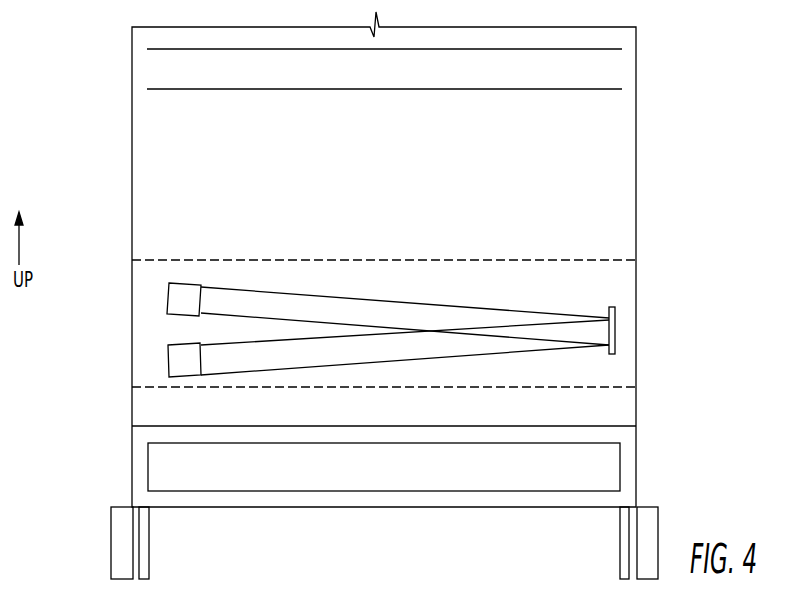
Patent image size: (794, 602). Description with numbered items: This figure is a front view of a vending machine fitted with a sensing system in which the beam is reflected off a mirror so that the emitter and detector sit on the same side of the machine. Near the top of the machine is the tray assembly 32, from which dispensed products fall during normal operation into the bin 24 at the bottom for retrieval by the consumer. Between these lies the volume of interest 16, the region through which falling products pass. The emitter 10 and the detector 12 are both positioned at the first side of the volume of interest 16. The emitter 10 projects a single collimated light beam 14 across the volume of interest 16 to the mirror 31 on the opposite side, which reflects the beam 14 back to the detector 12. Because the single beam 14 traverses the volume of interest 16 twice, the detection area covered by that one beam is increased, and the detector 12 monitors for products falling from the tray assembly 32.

The emitter 10 is at (180, 298).
The detector 12 is at (181, 363).
The collimated light beam 14 is at (583, 328).
The mirror 31 is at (620, 333).
The volume of interest 16 is at (582, 388).
The tray assembly 32 is at (623, 72).
The bin 24 is at (463, 465).